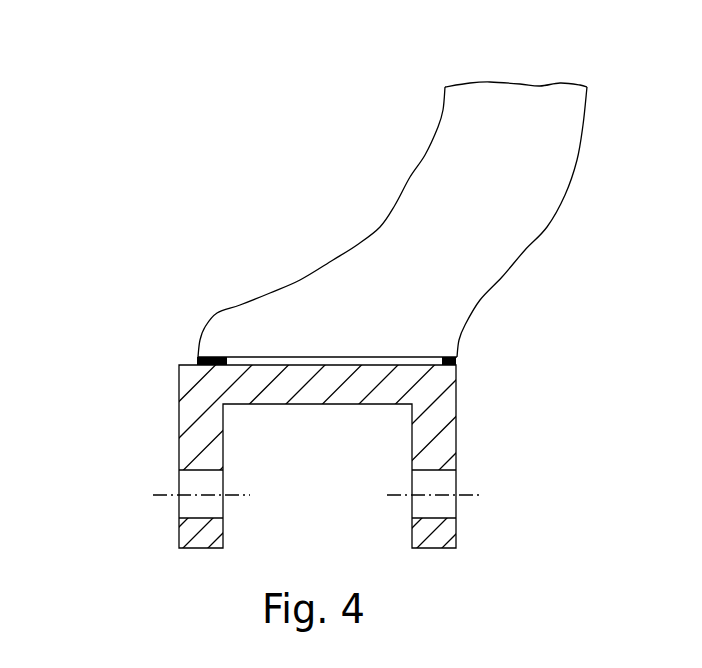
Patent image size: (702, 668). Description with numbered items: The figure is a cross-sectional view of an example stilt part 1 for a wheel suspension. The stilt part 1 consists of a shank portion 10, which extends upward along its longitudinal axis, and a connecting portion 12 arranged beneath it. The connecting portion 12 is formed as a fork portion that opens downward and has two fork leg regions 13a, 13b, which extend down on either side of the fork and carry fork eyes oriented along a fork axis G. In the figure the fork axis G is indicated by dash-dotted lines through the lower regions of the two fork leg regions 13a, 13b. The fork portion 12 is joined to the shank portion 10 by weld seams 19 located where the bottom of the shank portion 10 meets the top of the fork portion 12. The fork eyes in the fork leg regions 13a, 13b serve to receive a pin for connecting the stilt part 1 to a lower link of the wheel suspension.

The stilt part 1 is at (305, 118).
The shank portion 10 is at (377, 250).
The connecting portion 12 is at (121, 413).
The fork leg region 13a is at (187, 455).
The fork leg region 13b is at (447, 443).
The weld seam 19 is at (200, 361).
The fork axis G is at (170, 495).